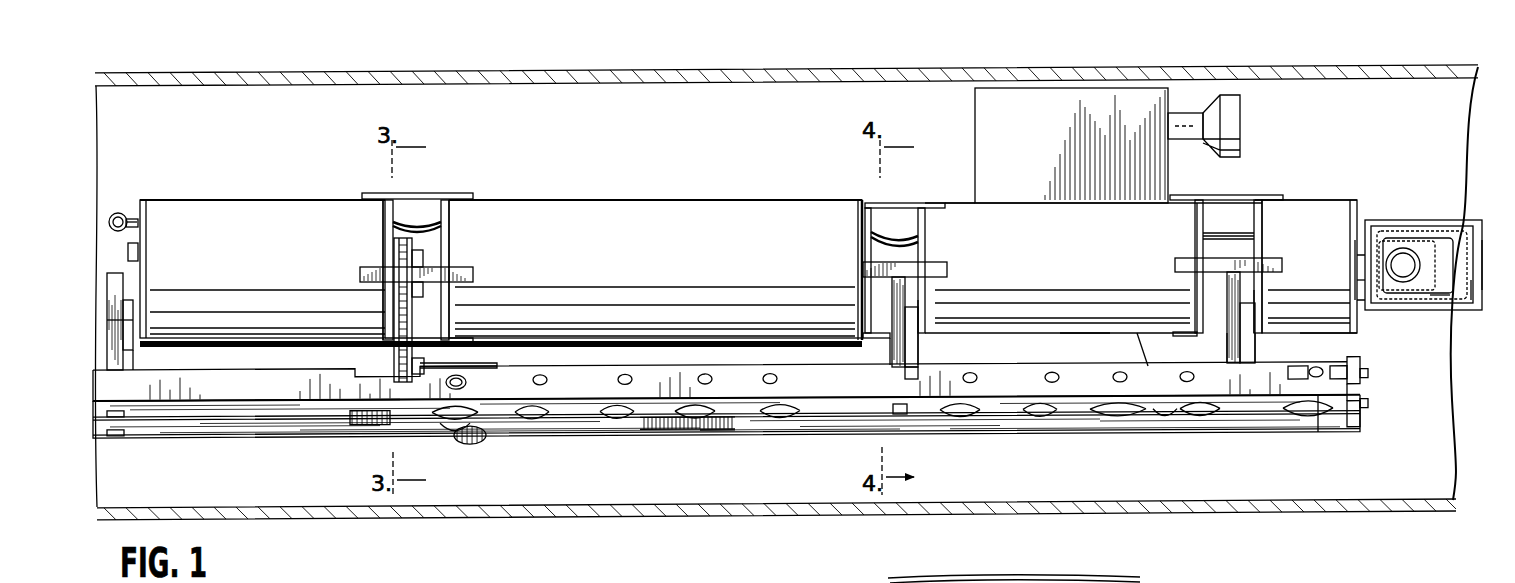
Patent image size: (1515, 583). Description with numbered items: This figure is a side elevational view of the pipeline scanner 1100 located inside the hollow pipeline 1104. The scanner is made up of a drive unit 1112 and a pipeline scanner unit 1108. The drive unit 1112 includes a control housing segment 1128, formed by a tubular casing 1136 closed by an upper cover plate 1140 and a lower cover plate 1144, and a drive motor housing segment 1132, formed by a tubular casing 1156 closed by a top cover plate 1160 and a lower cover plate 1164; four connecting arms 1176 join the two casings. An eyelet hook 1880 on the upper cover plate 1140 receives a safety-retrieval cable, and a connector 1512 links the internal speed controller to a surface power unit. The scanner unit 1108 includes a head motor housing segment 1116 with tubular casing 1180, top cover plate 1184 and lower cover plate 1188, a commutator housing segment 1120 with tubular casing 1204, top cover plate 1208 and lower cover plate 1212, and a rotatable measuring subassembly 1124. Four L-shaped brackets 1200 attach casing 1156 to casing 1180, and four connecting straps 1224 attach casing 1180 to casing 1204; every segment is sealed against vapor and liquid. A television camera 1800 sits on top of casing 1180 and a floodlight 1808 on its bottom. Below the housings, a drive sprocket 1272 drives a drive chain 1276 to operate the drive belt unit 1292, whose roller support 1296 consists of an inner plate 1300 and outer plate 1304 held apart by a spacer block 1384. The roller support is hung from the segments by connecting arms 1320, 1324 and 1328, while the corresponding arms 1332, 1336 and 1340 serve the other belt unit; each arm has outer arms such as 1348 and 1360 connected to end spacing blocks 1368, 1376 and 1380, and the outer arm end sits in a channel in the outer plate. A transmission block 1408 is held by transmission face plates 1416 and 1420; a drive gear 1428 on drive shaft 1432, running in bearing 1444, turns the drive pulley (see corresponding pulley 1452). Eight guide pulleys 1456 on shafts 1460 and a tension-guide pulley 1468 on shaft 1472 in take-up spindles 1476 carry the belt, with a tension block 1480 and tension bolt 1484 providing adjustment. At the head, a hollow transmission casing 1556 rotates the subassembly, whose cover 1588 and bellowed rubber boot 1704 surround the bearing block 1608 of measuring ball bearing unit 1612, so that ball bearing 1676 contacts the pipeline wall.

The pipeline scanner 1100 is at (755, 178).
The pipeline 1104 is at (375, 512).
The pipeline scanner unit 1108 is at (1205, 160).
The drive unit 1112 is at (328, 196).
The head motor housing segment 1116 is at (960, 196).
The commutator housing segment 1120 is at (1360, 332).
The rotatable measuring subassembly 1124 is at (1462, 216).
The control housing segment 1128 is at (243, 196).
The drive motor housing segment 1132 is at (603, 196).
The tubular casing 1136 is at (212, 205).
The upper cover plate 1140 is at (136, 213).
The lower cover plate 1144 is at (383, 214).
The tubular casing 1156 is at (680, 215).
The top cover plate 1160 is at (449, 233).
The lower cover plate 1164 is at (862, 238).
The connecting arms 1176 is at (412, 194).
The tubular casing 1180 is at (988, 215).
The top cover plate 1184 is at (925, 238).
The lower cover plate 1188 is at (1197, 228).
The L-shaped brackets 1200 is at (893, 205).
The tubular casing 1204 is at (1318, 318).
The top cover plate 1208 is at (1252, 233).
The lower cover plate 1212 is at (1352, 215).
The connecting straps 1224 is at (1218, 196).
The drive sprocket 1272 is at (423, 258).
The drive chain 1276 is at (410, 323).
The drive belt unit 1292 is at (712, 449).
The roller support 1296 is at (628, 448).
The inner plate 1300 is at (325, 435).
The outer plate 1304 is at (278, 390).
The connecting arm 1320 is at (116, 338).
The connecting arm 1324 is at (890, 352).
The connecting arm 1328 is at (1238, 350).
The connecting arm 1332 is at (138, 366).
The connecting arm 1336 is at (920, 353).
The connecting arm 1340 is at (1259, 352).
The outer arm 1348 is at (896, 300).
The arm 1360 is at (906, 380).
The end spacing block 1368 is at (920, 296).
The offset end spacing block 1376 is at (126, 290).
The offset end spacing block 1380 is at (1250, 290).
The spacer block 1384 is at (200, 422).
The transmission block 1408 is at (437, 367).
The transmission face plate 1416 is at (412, 372).
The transmission face plate 1420 is at (498, 375).
The drive gear 1428 is at (464, 446).
The drive shaft 1432 is at (470, 382).
The bearing 1444 is at (466, 385).
The drive pulley 1452 is at (455, 427).
The guide pulleys 1456 is at (545, 418).
The shafts 1460 is at (541, 378).
The tension-guide pulley 1468 is at (1310, 418).
The shaft 1472 is at (1291, 382).
The take-up spindles 1476 is at (1328, 388).
The tension block 1480 is at (1360, 377).
The tension bolt 1484 is at (1370, 418).
The connector 1512 is at (138, 252).
The hollow transmission casing 1556 is at (1357, 256).
The cover 1588 is at (1478, 280).
The bearing block 1608 is at (1418, 255).
The measuring ball bearing unit 1612 is at (1393, 250).
The ball bearing 1676 is at (1400, 270).
The bellowed rubber boot 1704 is at (1430, 295).
The television camera 1800 is at (1063, 105).
The floodlight 1808 is at (1090, 333).
The eyelet hook 1880 is at (137, 227).